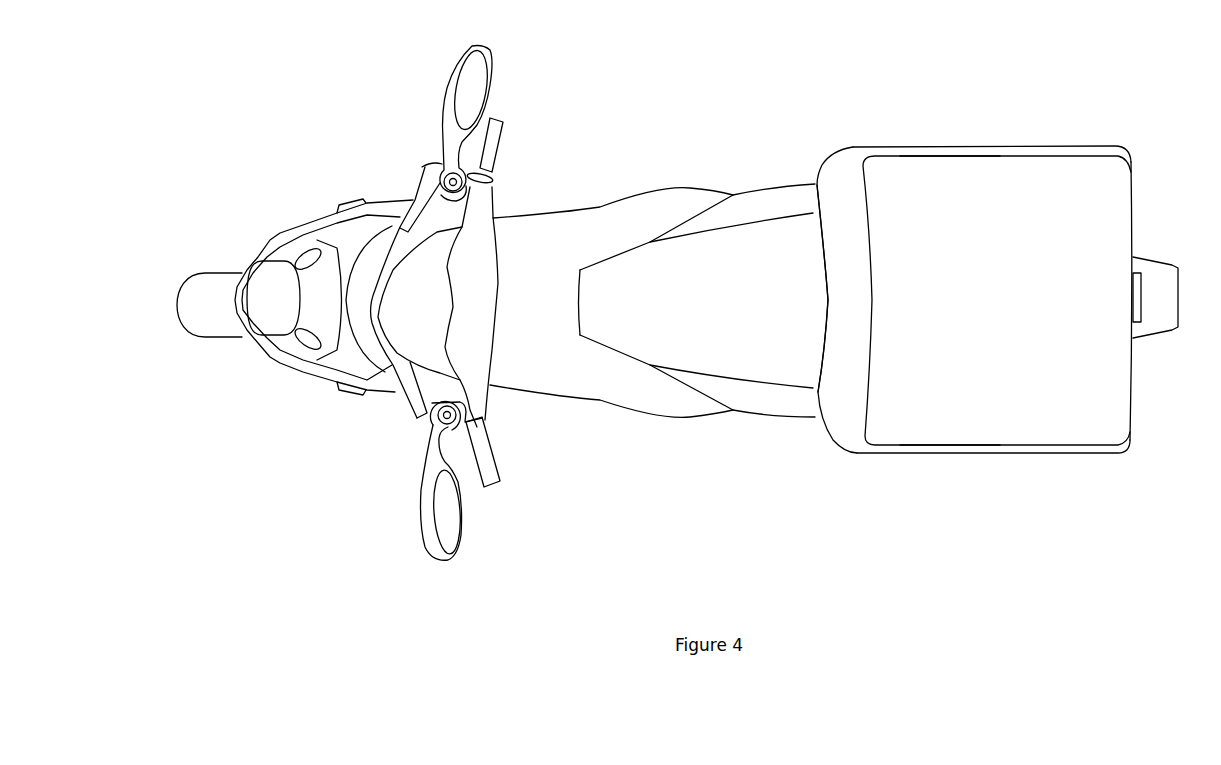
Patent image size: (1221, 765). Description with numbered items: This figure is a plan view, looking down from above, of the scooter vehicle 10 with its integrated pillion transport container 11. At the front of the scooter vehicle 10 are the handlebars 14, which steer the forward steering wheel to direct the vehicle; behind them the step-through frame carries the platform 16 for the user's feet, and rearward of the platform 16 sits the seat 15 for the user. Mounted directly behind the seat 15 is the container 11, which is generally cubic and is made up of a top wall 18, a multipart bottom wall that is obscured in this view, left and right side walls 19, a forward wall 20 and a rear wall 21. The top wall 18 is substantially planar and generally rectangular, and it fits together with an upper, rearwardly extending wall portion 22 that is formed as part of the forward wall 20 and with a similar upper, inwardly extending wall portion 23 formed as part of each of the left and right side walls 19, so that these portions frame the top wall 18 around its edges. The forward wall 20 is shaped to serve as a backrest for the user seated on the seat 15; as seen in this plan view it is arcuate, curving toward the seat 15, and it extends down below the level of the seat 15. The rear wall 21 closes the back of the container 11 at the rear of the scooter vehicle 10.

The scooter vehicle 10 is at (334, 180).
The pillion transport container 11 is at (1088, 124).
The handlebars 14 is at (506, 120).
The seat 15 is at (697, 300).
The platform 16 is at (611, 303).
The top wall 18 is at (997, 300).
The side walls 19 is at (912, 146).
The forward wall 20 is at (829, 305).
The rear wall 21 is at (1133, 403).
The upper, rearwardly extending wall portion 22 is at (838, 300).
The upper, inwardly extending wall portion 23 is at (878, 450).